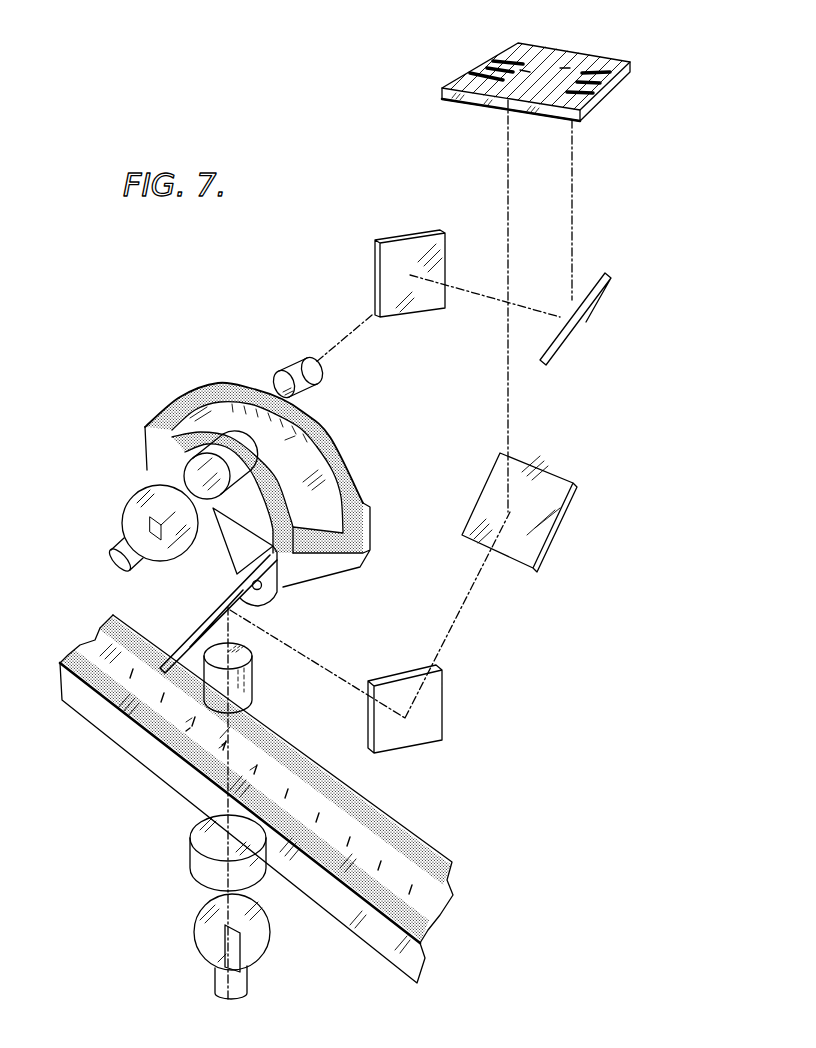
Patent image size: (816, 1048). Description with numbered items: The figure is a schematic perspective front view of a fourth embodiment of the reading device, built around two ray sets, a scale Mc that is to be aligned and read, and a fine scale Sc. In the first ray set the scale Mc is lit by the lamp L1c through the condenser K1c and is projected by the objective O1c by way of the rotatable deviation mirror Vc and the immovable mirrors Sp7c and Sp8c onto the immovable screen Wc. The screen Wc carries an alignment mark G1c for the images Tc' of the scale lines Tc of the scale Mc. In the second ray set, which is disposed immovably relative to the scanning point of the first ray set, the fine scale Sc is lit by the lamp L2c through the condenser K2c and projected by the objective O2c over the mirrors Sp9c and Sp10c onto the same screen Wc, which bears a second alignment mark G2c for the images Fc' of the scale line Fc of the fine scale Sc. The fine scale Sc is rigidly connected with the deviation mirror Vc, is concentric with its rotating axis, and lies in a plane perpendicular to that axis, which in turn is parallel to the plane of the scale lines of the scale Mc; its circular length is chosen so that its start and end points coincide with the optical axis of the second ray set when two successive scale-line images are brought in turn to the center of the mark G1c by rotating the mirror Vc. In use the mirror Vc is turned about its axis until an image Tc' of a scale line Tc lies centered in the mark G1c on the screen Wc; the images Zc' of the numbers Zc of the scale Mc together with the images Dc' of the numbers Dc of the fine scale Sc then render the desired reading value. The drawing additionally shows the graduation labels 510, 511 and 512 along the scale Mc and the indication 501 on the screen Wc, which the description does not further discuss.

The screen Wc is at (478, 96).
The alignment mark G1c is at (500, 58).
The images of the scale lines Tc' is at (470, 74).
The images of the numbers of the scale Zc' is at (540, 43).
The images of the numbers of the fine scale Dc' is at (580, 42).
The second alignment mark G2c is at (620, 72).
The images of the scale line of the fine scale Fc' is at (611, 91).
The scale indication 511 501 is at (535, 77).
The mirror Sp9c is at (380, 290).
The mirror Sp10c is at (596, 303).
The immovable mirror Sp8c is at (558, 505).
The immovable mirror Sp7c is at (442, 712).
The fine scale Sc is at (170, 432).
The numbers of the fine scale Dc is at (299, 422).
The scale line of the fine scale Fc is at (325, 439).
The condenser K2c is at (190, 468).
The lamp L2c is at (112, 556).
The objective O2c is at (288, 372).
The deviation mirror Vc is at (212, 608).
The objective O1c is at (252, 687).
The scale Mc is at (448, 934).
The scale graduation 512 is at (183, 713).
The scale graduation 511 is at (219, 741).
The scale graduation 510 is at (255, 766).
The scale lines Tc is at (140, 754).
The numbers of the scale Zc is at (165, 773).
The condenser K1c is at (192, 851).
The lamp L1c is at (200, 943).